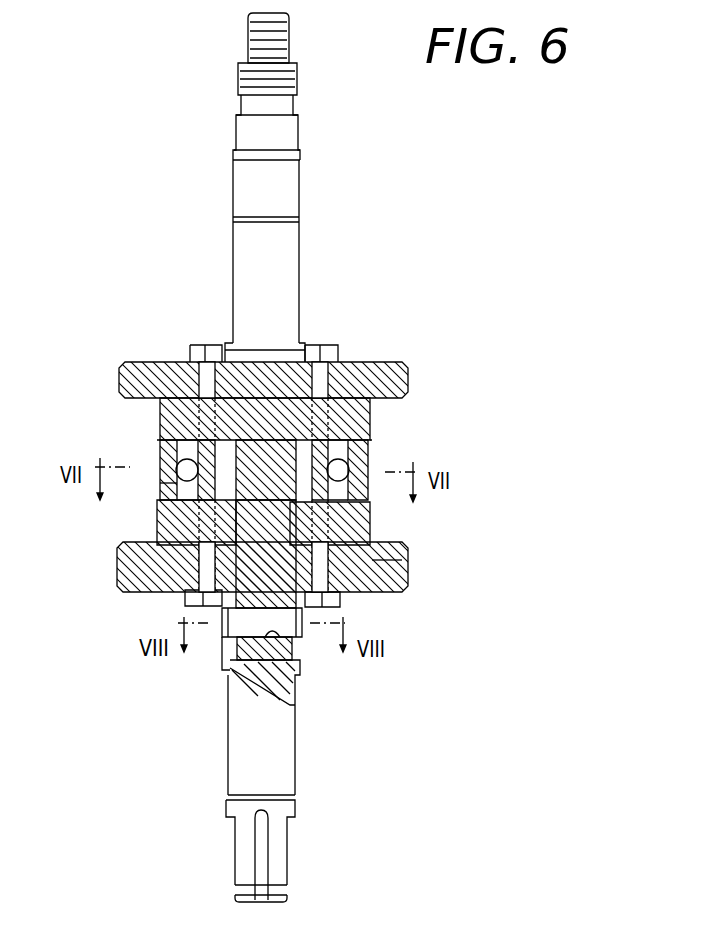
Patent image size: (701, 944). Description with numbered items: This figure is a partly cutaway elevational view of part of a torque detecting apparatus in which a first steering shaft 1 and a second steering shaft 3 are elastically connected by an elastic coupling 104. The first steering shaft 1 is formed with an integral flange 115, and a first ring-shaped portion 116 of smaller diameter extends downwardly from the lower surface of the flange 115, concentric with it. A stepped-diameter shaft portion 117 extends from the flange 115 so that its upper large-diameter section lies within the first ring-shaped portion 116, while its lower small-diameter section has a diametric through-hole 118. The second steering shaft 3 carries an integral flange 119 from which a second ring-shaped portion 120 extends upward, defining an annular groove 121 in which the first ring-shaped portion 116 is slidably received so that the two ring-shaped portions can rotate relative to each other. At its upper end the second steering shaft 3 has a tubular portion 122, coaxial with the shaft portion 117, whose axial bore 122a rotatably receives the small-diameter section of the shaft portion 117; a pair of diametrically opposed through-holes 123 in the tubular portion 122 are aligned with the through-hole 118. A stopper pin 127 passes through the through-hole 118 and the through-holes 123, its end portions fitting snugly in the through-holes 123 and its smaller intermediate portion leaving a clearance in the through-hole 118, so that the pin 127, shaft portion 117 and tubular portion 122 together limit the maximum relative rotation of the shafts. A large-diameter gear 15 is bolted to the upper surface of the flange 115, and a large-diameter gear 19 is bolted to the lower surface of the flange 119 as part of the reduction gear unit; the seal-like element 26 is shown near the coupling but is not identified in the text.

The first steering shaft 1 is at (305, 271).
The second steering shaft 3 is at (226, 762).
The large-diameter gear 15 is at (381, 380).
The large-diameter gear 19 is at (122, 588).
The seal 26 is at (162, 485).
The elastic coupling 104 is at (420, 461).
The flange 115 is at (372, 410).
The first ring-shaped portion 116 is at (336, 462).
The stepped-diameter shaft portion 117 is at (292, 522).
The through-hole 118 is at (300, 655).
The flange 119 is at (176, 525).
The second ring-shaped portion 120 is at (160, 465).
The annular groove 121 is at (162, 445).
The tubular portion 122 is at (197, 606).
The axial bore 122a is at (395, 576).
The through-holes 123 is at (222, 630).
The stopper pin 127 is at (300, 620).